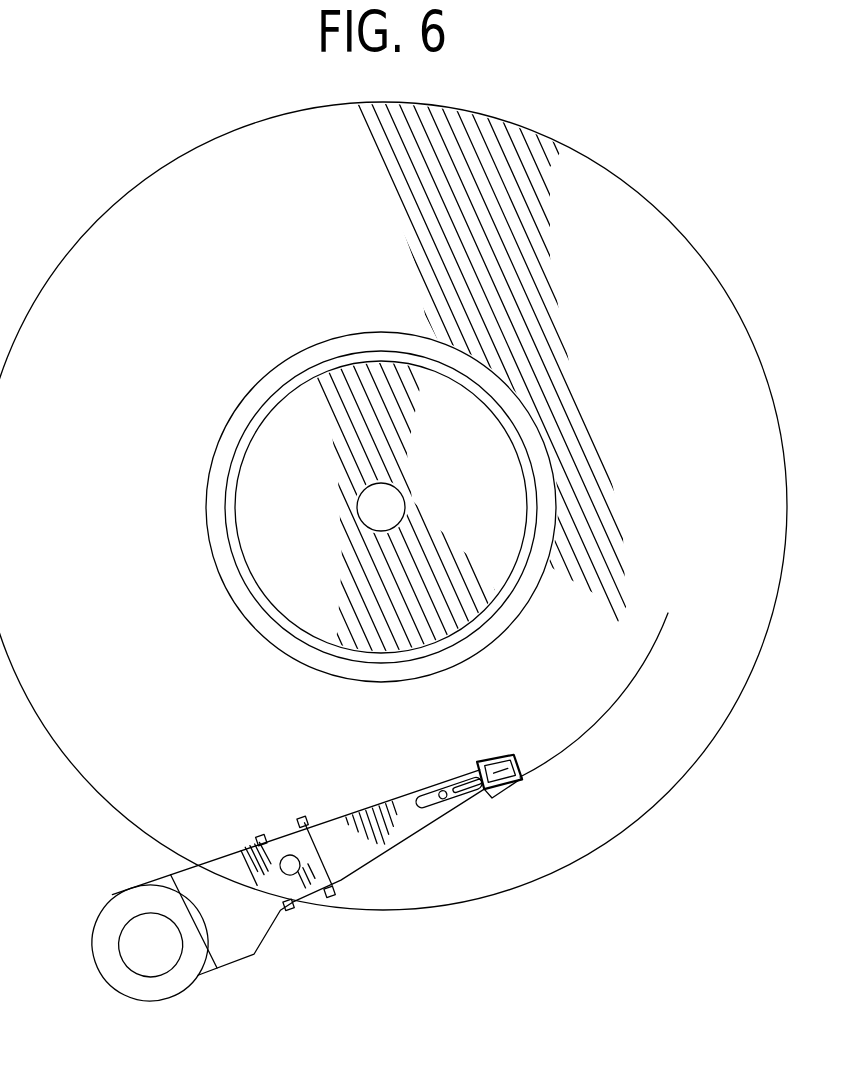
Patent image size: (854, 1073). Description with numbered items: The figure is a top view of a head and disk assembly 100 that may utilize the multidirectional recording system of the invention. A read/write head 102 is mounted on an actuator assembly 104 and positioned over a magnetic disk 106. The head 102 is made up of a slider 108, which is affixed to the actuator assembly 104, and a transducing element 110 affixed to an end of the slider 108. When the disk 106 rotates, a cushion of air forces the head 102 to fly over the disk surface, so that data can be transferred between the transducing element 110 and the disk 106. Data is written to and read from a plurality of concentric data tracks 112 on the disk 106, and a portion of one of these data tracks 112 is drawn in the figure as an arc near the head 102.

The head and disk assembly 100 is at (703, 850).
The read/write head 102 is at (485, 758).
The actuator assembly 104 is at (238, 952).
The magnetic disk 106 is at (187, 173).
The slider 108 is at (498, 752).
The transducing element 110 is at (518, 757).
The concentric data tracks 112 is at (648, 657).